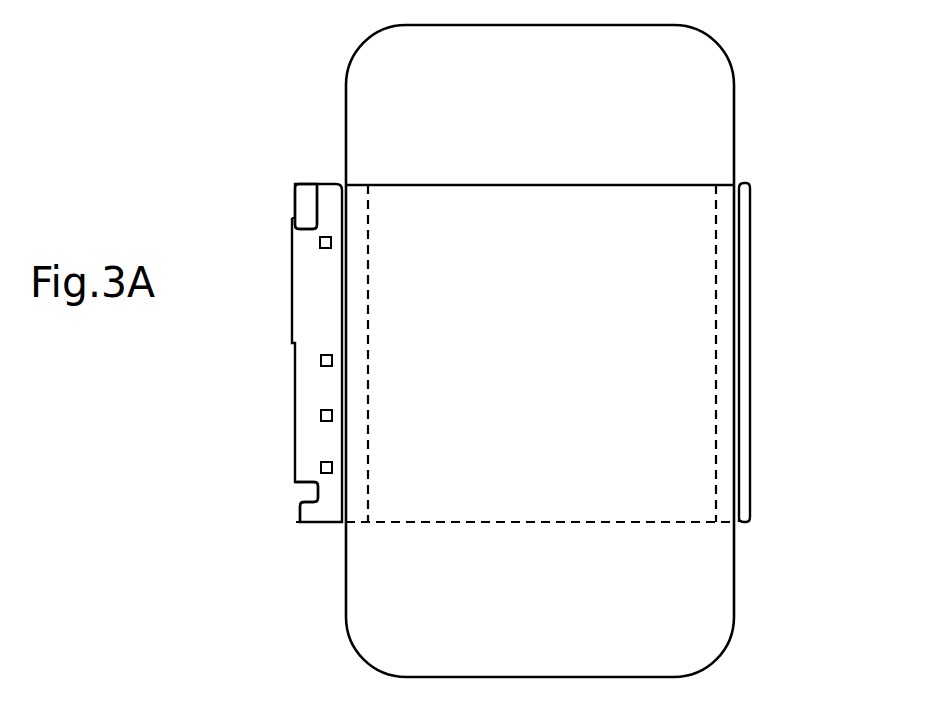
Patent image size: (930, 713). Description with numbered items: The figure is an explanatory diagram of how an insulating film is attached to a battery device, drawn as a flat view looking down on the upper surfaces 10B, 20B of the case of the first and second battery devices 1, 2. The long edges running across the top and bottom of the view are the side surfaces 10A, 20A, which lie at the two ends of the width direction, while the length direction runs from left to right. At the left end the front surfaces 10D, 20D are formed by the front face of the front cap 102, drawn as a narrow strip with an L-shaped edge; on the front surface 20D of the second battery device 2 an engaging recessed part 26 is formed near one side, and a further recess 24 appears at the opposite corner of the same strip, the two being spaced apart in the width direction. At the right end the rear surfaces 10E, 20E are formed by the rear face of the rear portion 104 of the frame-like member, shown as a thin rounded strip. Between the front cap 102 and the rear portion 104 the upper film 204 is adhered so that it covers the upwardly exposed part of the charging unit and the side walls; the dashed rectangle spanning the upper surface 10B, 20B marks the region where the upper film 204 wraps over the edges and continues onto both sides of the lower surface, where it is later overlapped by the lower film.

The multilayer printed circuit board 1 is at (268, 351).
The second battery device 2 is at (278, 171).
The notch 24 is at (304, 195).
The engaging recessed part 26 is at (302, 492).
The front cap 102 is at (292, 268).
The rear portion 104 is at (751, 240).
The upper film 204 is at (735, 90).
The side surface 10A is at (540, 354).
The side surface 20A is at (473, 185).
The upper surface 10B is at (628, 353).
The upper surface 20B is at (662, 348).
The front surface 10D is at (252, 353).
The front surface 20D is at (252, 353).
The rear surface 10E is at (812, 352).
The rear surface 20E is at (812, 352).